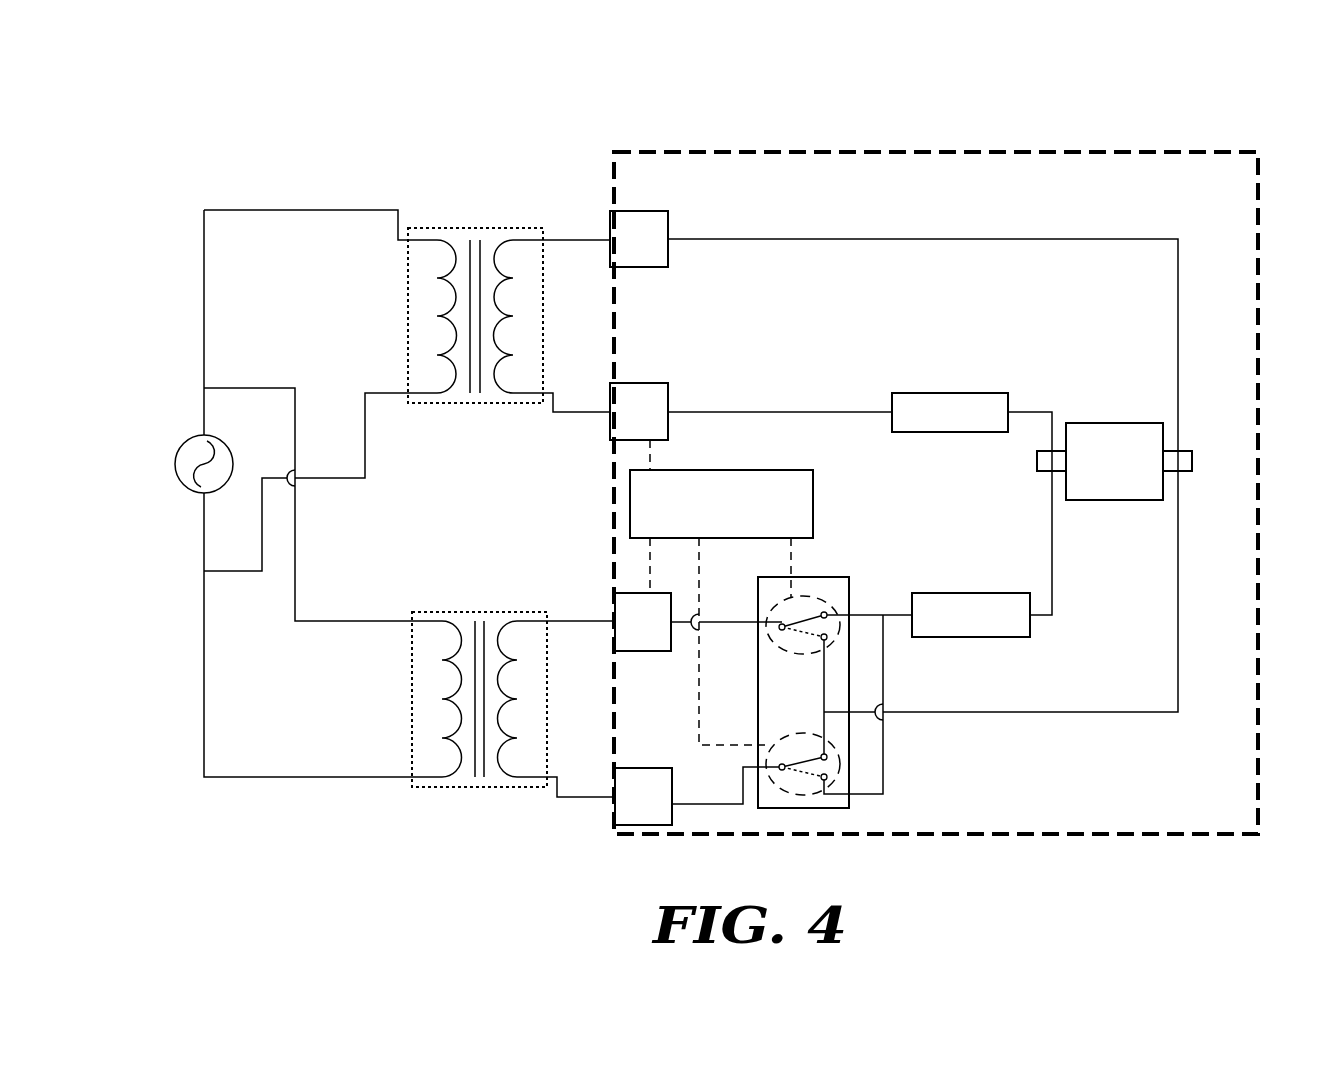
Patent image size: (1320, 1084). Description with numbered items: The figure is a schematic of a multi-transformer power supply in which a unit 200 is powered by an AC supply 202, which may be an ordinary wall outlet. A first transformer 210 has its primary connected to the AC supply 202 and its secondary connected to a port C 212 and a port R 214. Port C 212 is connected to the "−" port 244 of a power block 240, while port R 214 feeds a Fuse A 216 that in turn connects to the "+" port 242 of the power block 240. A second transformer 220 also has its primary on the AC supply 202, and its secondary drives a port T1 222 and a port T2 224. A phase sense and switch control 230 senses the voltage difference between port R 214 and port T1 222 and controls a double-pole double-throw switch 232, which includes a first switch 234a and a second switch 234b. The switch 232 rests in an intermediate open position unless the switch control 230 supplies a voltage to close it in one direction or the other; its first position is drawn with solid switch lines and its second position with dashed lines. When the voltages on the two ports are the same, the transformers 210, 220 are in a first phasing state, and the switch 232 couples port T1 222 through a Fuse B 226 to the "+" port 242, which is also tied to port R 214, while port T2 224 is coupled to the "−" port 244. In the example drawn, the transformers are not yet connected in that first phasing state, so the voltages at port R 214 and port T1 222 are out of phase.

The unit 200 is at (890, 162).
The AC supply 202 is at (201, 437).
The first transformer 210 is at (471, 228).
The port C 212 is at (657, 229).
The port R 214 is at (650, 412).
The Fuse A 216 is at (960, 393).
The second transformer 220 is at (486, 623).
The port T1 222 is at (637, 593).
The port T2 224 is at (652, 812).
The Fuse B 226 is at (977, 625).
The phase sense and switch control 230 is at (630, 488).
The double-pole double-throw switch 232 is at (821, 688).
The first switch 234a is at (787, 602).
The second switch 234b is at (802, 780).
The power block 240 is at (1120, 423).
The "+" port 242 is at (1037, 463).
The "−" port 244 is at (1185, 451).